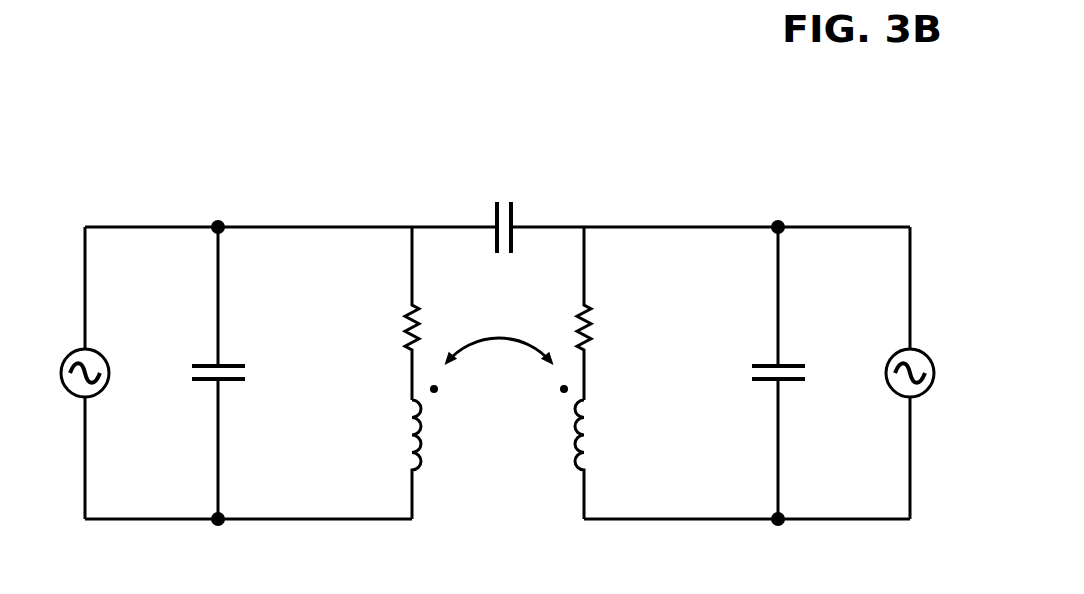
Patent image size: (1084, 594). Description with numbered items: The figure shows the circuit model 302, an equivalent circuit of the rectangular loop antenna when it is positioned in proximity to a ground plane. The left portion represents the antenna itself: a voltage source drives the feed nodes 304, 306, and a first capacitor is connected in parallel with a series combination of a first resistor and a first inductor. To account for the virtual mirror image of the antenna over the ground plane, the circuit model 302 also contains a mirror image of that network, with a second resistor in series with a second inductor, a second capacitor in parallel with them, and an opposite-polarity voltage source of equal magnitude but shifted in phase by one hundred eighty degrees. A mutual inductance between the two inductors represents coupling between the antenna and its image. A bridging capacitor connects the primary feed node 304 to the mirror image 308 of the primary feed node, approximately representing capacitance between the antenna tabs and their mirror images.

The circuit model 302 is at (712, 104).
The primary feed node 304 is at (220, 224).
The feed node 306 is at (220, 522).
The mirror image of the primary feed node 308 is at (780, 224).